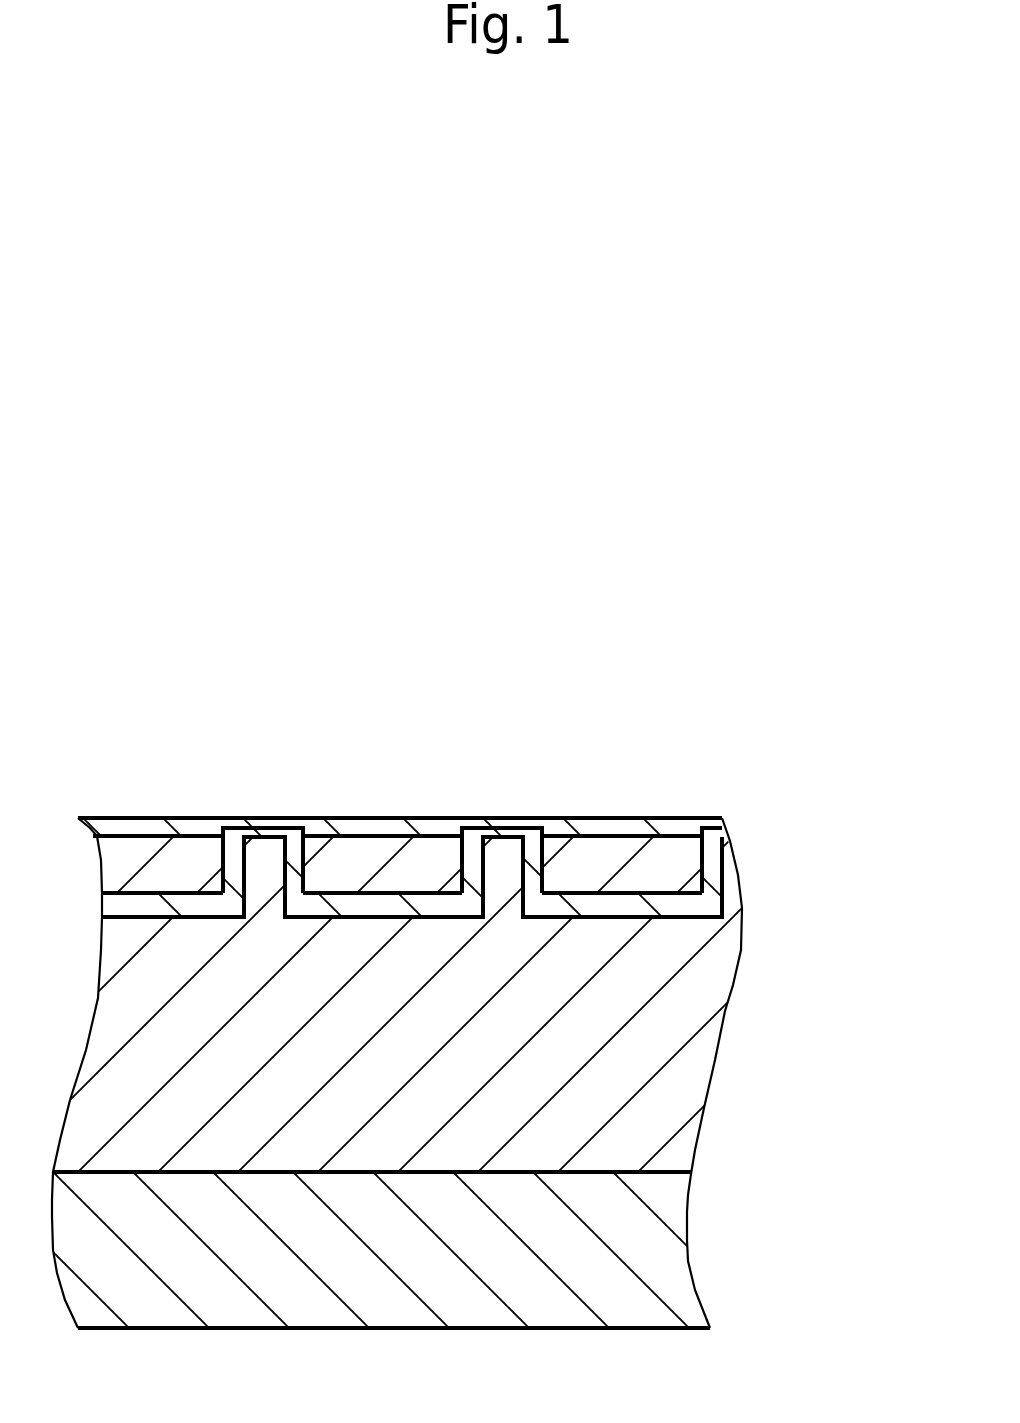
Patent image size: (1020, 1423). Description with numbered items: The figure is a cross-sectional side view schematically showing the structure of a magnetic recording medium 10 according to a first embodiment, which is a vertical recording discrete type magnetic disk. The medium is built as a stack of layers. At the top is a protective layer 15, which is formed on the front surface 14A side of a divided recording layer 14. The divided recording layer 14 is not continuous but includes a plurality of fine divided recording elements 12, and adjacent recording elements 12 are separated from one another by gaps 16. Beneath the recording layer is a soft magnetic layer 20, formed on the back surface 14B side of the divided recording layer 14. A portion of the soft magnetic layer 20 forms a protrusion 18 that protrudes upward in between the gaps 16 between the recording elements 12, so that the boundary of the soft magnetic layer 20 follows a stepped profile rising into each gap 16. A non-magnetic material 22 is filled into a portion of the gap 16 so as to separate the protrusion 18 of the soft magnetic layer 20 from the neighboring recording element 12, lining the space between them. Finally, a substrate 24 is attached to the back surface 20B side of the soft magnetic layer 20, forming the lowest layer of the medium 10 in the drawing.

The magnetic recording medium 10 is at (409, 533).
The recording element 12 is at (365, 852).
The divided recording layer 14 is at (510, 711).
The front surface 14A is at (625, 836).
The back surface 14B is at (672, 893).
The protective layer 15 is at (127, 817).
The gap 16 is at (302, 790).
The protrusion 18 is at (260, 857).
The soft magnetic layer 20 is at (510, 711).
The back surface 20B is at (691, 1202).
The non-magnetic material 22 is at (473, 858).
The substrate 24 is at (690, 1263).